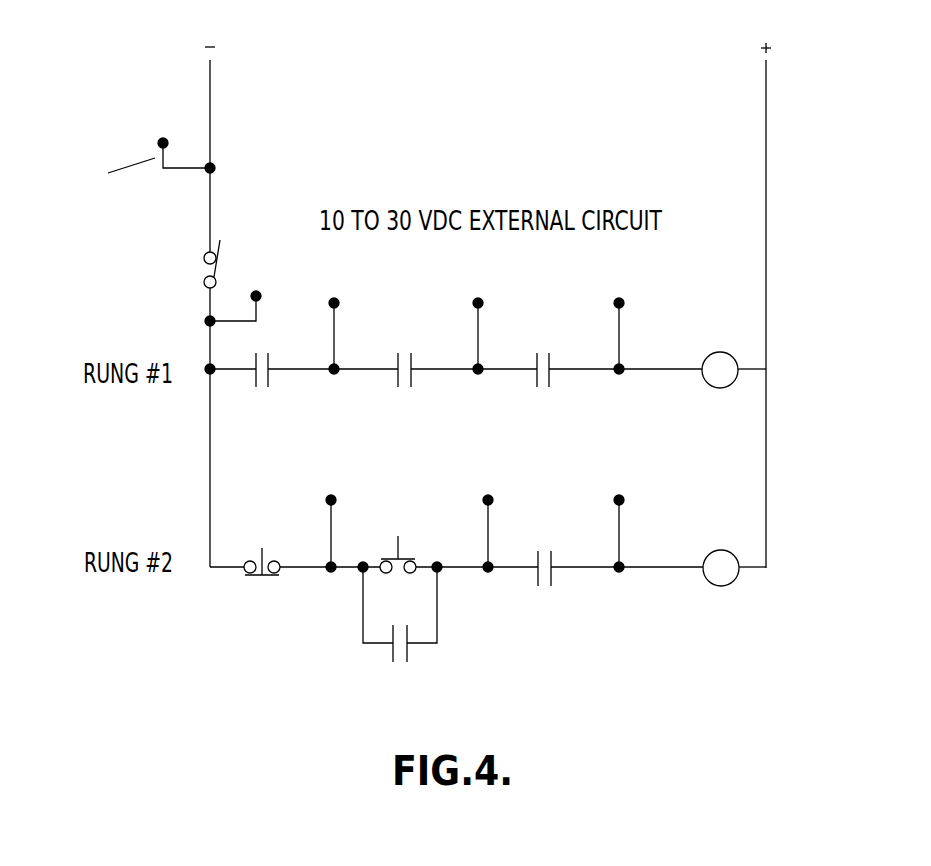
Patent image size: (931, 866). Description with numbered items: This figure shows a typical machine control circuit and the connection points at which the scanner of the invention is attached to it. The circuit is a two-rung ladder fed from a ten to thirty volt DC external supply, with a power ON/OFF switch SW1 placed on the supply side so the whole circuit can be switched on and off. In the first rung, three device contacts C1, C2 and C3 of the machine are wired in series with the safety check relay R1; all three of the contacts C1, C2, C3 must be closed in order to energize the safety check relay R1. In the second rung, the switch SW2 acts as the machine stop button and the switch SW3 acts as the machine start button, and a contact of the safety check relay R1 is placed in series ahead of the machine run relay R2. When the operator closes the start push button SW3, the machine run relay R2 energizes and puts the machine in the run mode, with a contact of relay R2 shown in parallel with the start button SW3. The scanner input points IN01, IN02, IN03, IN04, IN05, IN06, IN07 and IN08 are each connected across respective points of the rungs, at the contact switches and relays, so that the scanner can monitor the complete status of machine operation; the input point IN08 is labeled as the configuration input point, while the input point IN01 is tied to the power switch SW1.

The input point IN01 is at (239, 294).
The input point IN02 is at (335, 318).
The input point IN03 is at (478, 318).
The input point IN04 is at (618, 318).
The input point IN05 is at (331, 518).
The input point IN06 is at (488, 518).
The input point IN07 is at (619, 518).
The input point IN08 is at (108, 173).
The power ON/OFF switch SW1 is at (120, 271).
The machine stop button SW2 is at (262, 564).
The machine start button SW3 is at (400, 558).
The device contact C1 is at (262, 354).
The device contact C2 is at (406, 354).
The device contact C3 is at (545, 354).
The safety check relay R1 is at (697, 474).
The machine run relay R2 is at (620, 611).